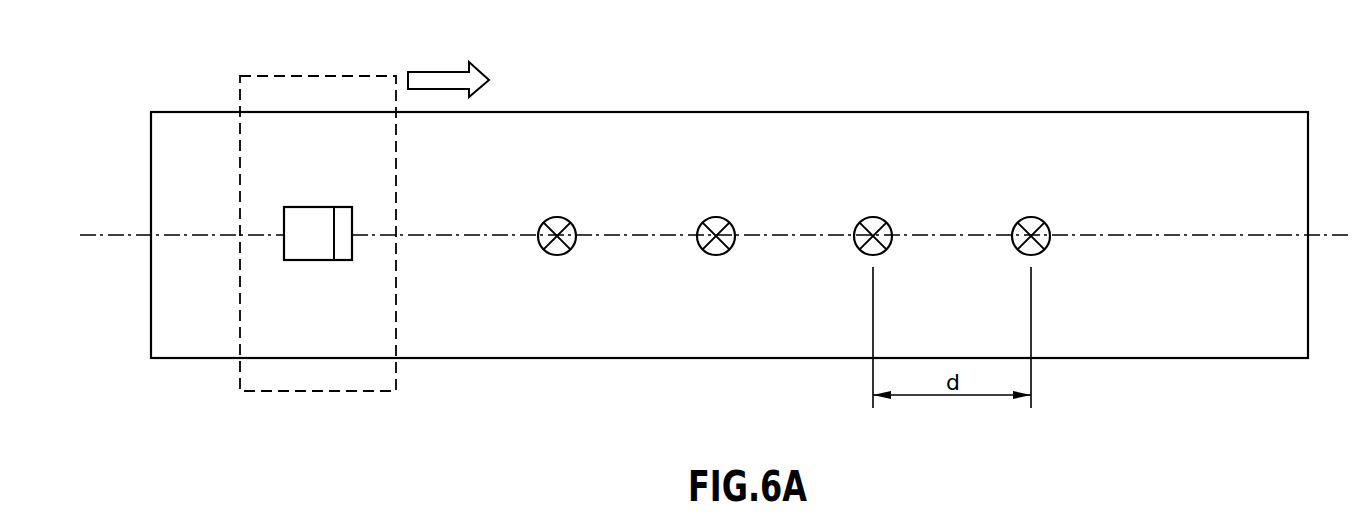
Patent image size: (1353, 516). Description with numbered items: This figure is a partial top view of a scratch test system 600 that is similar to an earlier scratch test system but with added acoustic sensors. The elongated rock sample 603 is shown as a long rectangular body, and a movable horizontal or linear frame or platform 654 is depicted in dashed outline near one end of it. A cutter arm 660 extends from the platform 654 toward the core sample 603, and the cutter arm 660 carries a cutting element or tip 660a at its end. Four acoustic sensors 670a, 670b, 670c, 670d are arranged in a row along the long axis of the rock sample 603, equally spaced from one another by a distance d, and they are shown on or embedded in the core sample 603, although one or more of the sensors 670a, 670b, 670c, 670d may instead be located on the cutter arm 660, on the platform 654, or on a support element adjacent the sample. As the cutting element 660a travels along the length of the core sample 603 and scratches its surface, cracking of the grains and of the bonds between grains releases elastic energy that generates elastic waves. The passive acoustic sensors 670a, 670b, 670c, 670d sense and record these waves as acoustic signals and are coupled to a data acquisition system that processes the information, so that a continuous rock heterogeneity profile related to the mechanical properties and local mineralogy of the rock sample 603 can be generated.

The scratch test system 600 is at (150, 66).
The rock sample 603 is at (1178, 123).
The movable horizontal or linear frame or platform 654 is at (358, 393).
The cutter arm 660 is at (292, 216).
The cutting element or tip 660a is at (343, 255).
The acoustic sensor 670a is at (558, 221).
The acoustic sensor 670b is at (717, 221).
The acoustic sensor 670c is at (874, 221).
The acoustic sensor 670d is at (1032, 221).